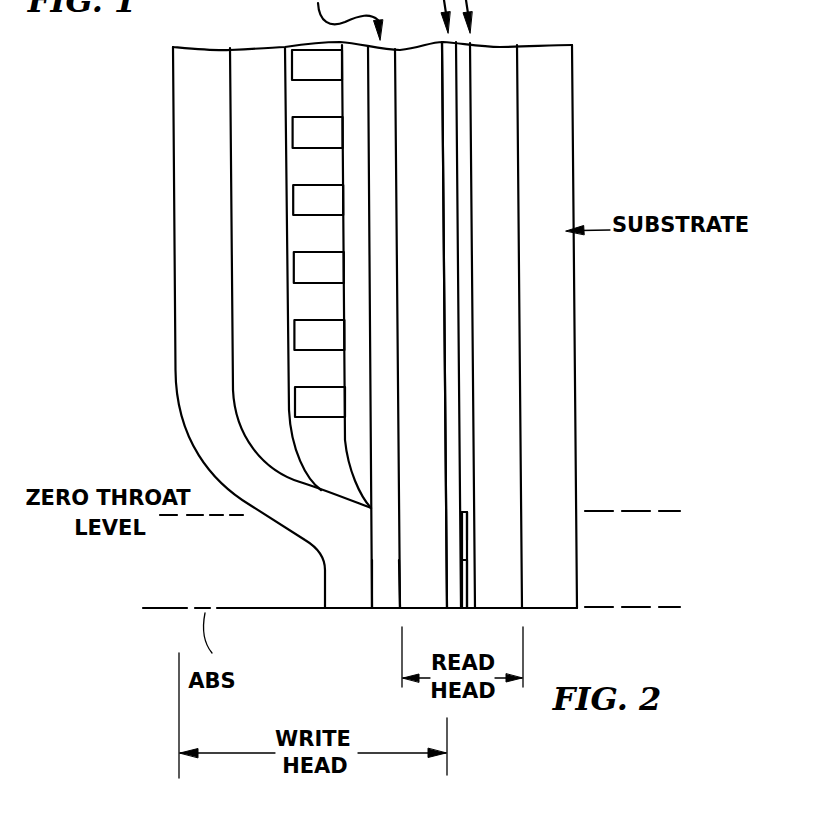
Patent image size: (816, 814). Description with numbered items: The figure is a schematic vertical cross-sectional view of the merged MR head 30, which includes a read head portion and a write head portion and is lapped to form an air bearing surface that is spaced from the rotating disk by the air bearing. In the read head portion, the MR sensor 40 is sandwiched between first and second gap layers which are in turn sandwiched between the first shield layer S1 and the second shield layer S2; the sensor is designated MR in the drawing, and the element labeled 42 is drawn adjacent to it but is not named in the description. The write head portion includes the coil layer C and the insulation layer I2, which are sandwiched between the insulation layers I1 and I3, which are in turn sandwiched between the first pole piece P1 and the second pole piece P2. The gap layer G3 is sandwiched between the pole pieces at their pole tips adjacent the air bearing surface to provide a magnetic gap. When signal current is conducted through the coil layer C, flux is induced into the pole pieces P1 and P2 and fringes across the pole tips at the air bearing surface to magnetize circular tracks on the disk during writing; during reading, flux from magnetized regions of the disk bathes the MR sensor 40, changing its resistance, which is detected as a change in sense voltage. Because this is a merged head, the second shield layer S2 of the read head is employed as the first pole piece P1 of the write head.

The head 30 is at (423, 304).
The magnetoresistive sensor 40 is at (468, 592).
The lead layer 42 is at (467, 534).
The second pole piece P2 is at (249, 327).
The first pole piece P1 is at (424, 325).
The first shield layer S1 is at (496, 325).
The second shield layer S2 is at (421, 325).
The insulation layer I1 is at (358, 327).
The insulation layer I2 is at (328, 276).
The insulation layer I3 is at (300, 278).
The coil layer C is at (318, 233).
The gap layer G3 is at (375, 570).
The magnetoresistive sensor MR is at (450, 589).